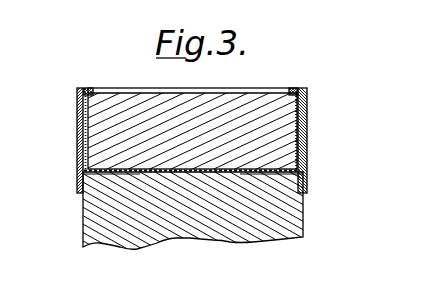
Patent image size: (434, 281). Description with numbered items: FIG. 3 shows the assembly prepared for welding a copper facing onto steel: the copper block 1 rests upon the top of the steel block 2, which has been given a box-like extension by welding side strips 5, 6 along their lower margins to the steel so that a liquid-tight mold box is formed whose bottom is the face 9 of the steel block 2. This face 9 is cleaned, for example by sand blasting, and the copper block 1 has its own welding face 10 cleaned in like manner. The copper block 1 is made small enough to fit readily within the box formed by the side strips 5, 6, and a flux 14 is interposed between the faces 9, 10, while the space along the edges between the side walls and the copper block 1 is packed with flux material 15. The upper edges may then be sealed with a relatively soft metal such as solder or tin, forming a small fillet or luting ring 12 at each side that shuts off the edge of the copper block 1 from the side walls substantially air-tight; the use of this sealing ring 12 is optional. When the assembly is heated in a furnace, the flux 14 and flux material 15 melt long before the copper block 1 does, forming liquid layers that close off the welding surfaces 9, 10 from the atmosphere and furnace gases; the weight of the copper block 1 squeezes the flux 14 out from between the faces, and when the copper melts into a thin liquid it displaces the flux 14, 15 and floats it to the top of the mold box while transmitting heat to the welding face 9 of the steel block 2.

The copper block 1 is at (250, 100).
The steel block 2 is at (308, 238).
The side strip 5 is at (76, 125).
The side strip 6 is at (308, 125).
The face of the steel block 9 is at (256, 174).
The welding face of the copper block 10 is at (280, 160).
The sealing ring 12 is at (87, 90).
The flux 14 is at (113, 173).
The flux material 15 is at (78, 148).